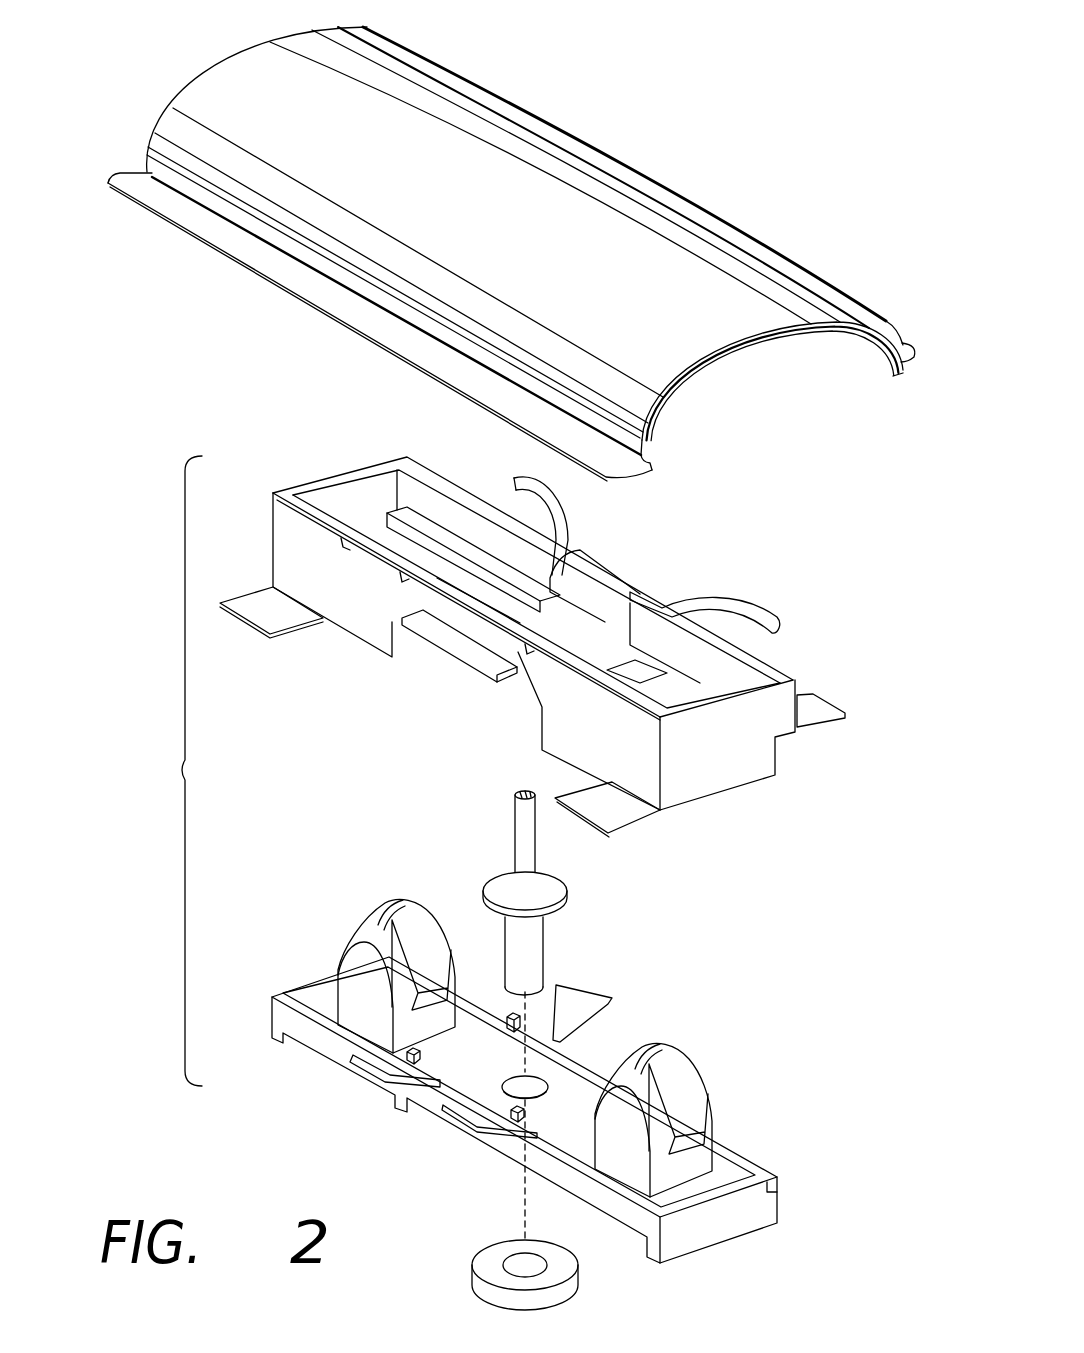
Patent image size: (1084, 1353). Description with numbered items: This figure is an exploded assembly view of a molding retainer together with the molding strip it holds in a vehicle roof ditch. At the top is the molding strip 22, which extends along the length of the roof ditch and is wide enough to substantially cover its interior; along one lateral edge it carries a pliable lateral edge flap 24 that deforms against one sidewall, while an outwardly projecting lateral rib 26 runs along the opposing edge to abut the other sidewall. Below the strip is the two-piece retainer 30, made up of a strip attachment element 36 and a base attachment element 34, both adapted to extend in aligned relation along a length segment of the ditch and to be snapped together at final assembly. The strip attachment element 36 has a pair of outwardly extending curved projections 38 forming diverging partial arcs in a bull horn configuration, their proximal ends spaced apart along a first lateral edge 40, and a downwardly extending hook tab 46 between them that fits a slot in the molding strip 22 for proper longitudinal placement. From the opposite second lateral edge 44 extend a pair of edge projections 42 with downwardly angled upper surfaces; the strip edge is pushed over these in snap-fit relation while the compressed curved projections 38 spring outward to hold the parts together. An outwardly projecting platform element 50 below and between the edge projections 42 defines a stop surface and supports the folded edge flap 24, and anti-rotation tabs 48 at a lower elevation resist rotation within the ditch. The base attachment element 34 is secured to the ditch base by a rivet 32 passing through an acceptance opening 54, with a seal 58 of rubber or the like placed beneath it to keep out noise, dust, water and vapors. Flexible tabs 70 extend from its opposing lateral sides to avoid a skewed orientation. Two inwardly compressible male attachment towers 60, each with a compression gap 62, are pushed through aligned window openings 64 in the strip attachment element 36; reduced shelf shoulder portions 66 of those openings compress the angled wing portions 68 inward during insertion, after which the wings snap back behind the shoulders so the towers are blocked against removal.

The molding strip 22 is at (648, 180).
The pliable lateral edge flap 24 is at (248, 270).
The lateral rib 26 is at (918, 350).
The retainer 30 is at (161, 771).
The rivet 32 is at (550, 937).
The base attachment element 34 is at (745, 1151).
The strip attachment element 36 is at (786, 668).
The curved projections 38 is at (566, 521).
The first lateral edge 40 is at (440, 473).
The edge projections 42 is at (400, 578).
The second lateral edge 44 is at (300, 510).
The hook tab 46 is at (608, 572).
The anti-rotation tabs 48 is at (830, 708).
The platform element 50 is at (458, 660).
The acceptance opening 54 is at (541, 1081).
The seal 58 is at (500, 1243).
The attachment towers 60 is at (363, 1010).
The compression gap 62 is at (403, 895).
The window openings 64 is at (345, 498).
The shelf shoulder portions 66 is at (447, 543).
The angled wing portions 68 is at (432, 967).
The flexible tabs 70 is at (592, 975).